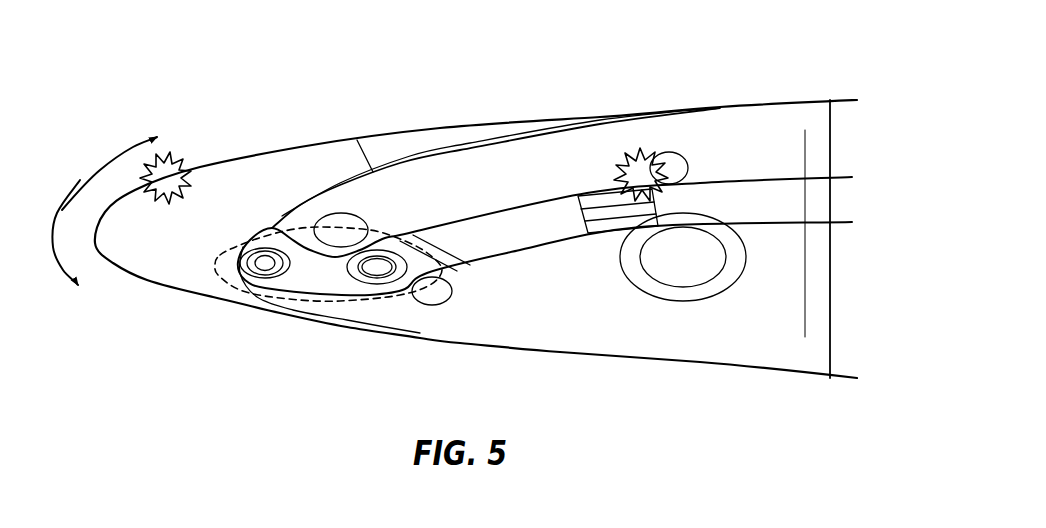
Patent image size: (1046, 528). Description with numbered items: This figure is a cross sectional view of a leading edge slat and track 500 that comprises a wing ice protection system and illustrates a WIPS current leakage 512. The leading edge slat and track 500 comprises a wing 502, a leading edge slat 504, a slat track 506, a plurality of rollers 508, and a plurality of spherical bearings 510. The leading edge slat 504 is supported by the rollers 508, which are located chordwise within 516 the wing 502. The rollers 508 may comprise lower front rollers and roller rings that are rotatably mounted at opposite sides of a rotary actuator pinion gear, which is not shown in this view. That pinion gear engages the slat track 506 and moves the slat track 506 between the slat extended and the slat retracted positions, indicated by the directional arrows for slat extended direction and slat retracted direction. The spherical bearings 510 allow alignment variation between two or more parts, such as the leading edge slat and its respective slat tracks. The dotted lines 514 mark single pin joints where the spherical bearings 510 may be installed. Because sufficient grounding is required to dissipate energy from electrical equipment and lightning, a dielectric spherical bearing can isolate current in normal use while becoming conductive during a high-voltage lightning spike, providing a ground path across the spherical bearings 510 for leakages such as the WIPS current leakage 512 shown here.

The leading edge slat and track 500 is at (379, 59).
The wing 502 is at (638, 279).
The leading edge slat 504 is at (240, 182).
The slat track 506 is at (770, 180).
The rollers 508 is at (343, 210).
The spherical bearings 510 is at (263, 267).
The WIPS current leakage 512 is at (155, 180).
The dotted lines 514 is at (218, 262).
The chordwise location within the wing 516 is at (553, 330).